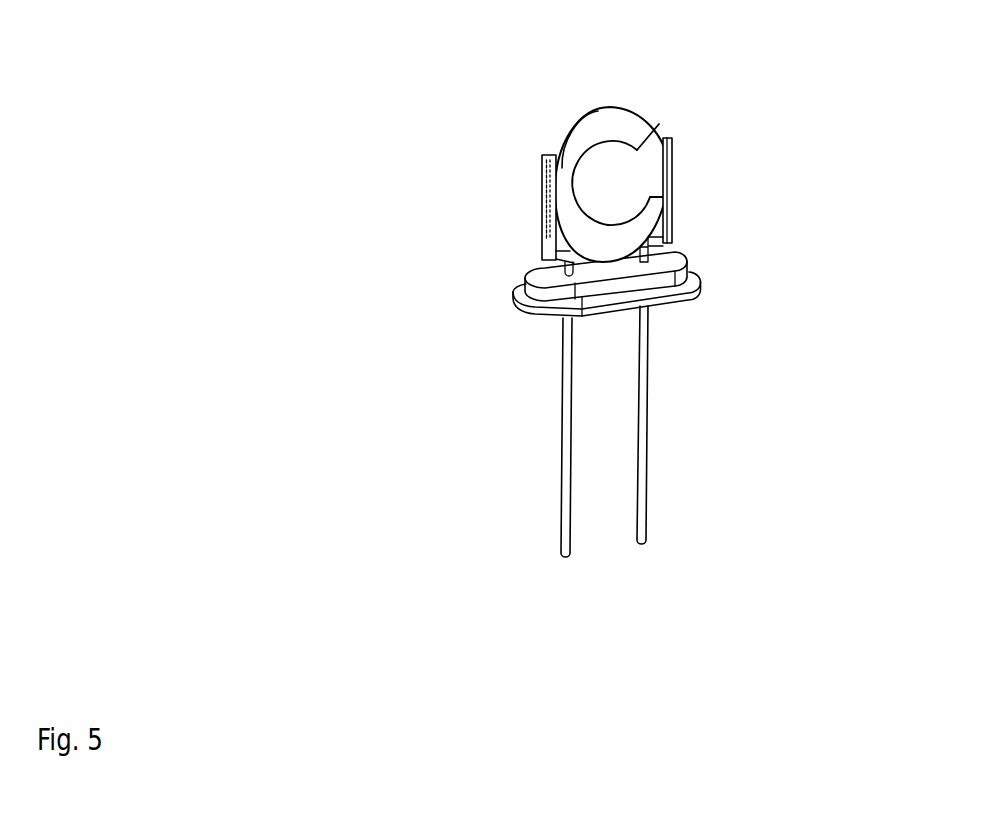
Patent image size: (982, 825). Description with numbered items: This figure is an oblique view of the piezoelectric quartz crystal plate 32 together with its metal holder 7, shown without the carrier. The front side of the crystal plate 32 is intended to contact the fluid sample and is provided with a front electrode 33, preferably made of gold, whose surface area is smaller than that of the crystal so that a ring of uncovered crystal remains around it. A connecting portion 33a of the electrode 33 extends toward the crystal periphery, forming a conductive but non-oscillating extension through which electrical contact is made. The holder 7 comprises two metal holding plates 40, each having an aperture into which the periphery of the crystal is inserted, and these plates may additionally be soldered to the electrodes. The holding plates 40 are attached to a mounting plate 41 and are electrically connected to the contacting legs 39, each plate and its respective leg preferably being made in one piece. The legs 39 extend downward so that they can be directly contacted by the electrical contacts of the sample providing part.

The holder 7 is at (447, 347).
The piezoelectric quartz crystal plate 32 is at (610, 117).
The front electrode 33 is at (608, 192).
The connecting portion 33a is at (655, 177).
The contacting legs 39 is at (565, 421).
The metal holding plates 40 is at (550, 238).
The mounting plate 41 is at (624, 285).